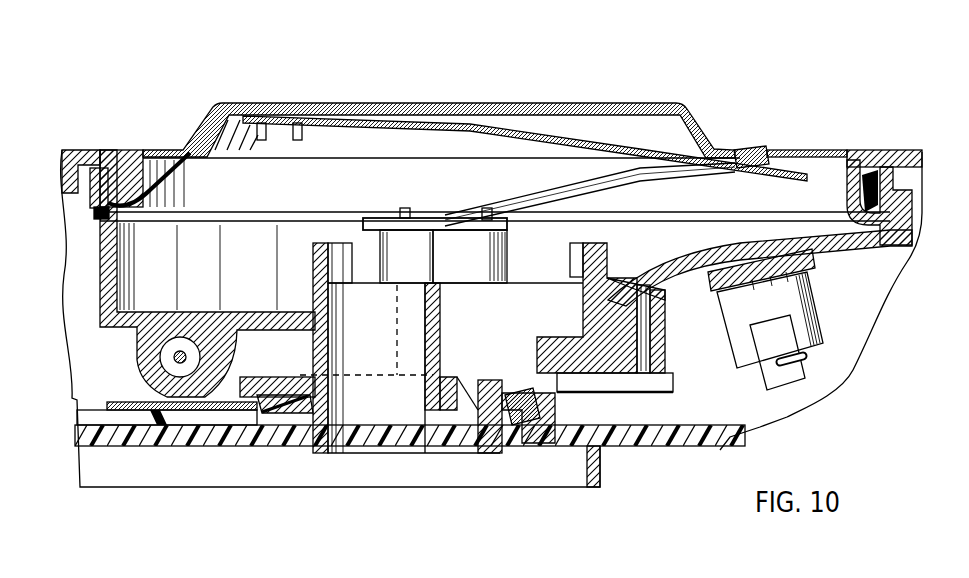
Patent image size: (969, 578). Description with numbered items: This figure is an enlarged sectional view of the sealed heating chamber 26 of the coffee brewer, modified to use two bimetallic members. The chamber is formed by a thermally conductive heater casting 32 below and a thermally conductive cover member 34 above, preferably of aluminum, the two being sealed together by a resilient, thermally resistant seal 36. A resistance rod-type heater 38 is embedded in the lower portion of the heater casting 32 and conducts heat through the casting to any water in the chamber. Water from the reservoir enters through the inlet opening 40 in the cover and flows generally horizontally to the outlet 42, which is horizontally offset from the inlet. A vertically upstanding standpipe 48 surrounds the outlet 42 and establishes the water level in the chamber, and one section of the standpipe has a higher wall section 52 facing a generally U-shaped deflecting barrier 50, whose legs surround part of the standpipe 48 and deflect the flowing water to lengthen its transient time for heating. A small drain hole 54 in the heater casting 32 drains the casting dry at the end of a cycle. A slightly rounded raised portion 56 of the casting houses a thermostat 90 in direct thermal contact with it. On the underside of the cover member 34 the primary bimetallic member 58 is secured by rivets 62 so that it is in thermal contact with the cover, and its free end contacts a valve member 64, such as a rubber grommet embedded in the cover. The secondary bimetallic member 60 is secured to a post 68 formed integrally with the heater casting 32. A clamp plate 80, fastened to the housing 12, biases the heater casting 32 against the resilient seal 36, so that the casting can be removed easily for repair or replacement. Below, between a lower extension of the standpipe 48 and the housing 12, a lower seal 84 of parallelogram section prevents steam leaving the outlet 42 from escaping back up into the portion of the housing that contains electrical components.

The housing 12 is at (265, 440).
The sealed heating chamber 26 is at (470, 66).
The heater casting 32 is at (110, 237).
The cover member 34 is at (188, 150).
The resilient seal 36 is at (108, 214).
The resistance rod-type heater 38 is at (181, 365).
The inlet opening 40 is at (765, 142).
The outlet 42 is at (386, 434).
The standpipe 48 is at (380, 312).
The deflecting barrier 50 is at (600, 264).
The higher wall section 52 is at (318, 257).
The drain hole 54 is at (470, 395).
The raised portion 56 is at (727, 257).
The primary bimetallic member 58 is at (534, 133).
The secondary bimetallic member 60 is at (547, 196).
The rivets 62 is at (270, 128).
The valve member 64 is at (740, 149).
The post 68 is at (490, 257).
The clamp plate 80 is at (110, 402).
The lower seal 84 is at (514, 400).
The thermostat 90 is at (810, 352).